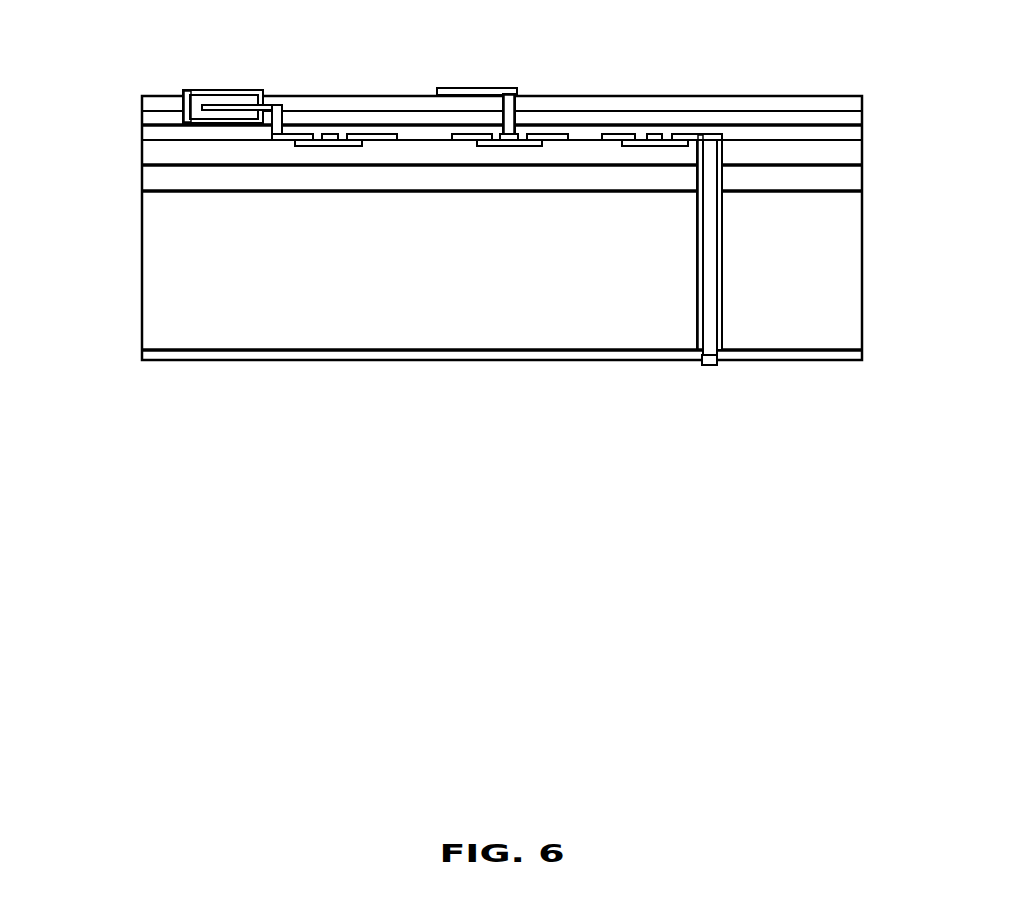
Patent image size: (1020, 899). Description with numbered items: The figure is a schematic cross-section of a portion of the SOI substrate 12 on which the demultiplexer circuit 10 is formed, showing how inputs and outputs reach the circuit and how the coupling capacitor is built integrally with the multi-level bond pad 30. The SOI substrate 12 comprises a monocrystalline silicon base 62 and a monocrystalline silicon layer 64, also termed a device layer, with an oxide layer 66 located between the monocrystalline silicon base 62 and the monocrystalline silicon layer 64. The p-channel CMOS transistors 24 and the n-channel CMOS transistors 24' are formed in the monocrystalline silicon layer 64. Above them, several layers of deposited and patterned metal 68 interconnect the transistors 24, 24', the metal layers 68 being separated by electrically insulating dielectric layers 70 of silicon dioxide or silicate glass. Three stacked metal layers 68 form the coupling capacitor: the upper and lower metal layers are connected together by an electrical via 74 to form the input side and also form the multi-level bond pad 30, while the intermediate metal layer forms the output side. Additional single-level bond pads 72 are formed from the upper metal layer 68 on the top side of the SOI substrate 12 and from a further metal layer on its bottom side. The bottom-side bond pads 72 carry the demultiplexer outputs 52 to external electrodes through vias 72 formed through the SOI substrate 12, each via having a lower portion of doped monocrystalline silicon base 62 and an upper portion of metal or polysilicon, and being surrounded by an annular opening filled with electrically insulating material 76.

The demultiplexer circuit 10 is at (824, 396).
The SOI substrate 12 is at (86, 140).
The p-channel CMOS transistors 24 is at (491, 181).
The n-channel CMOS transistors 24' is at (510, 181).
The multi-level bond pad 30 is at (221, 80).
The demultiplexer outputs 52 is at (712, 133).
The monocrystalline silicon base 62 is at (183, 322).
The monocrystalline silicon layer 64 is at (142, 152).
The oxide layer 66 is at (142, 182).
The metal layers 68 is at (446, 88).
The dielectric layers 70 is at (472, 122).
The single-level bond pad 72 is at (480, 86).
The electrical via 74 is at (188, 103).
The electrically-insulating material 76 is at (722, 283).